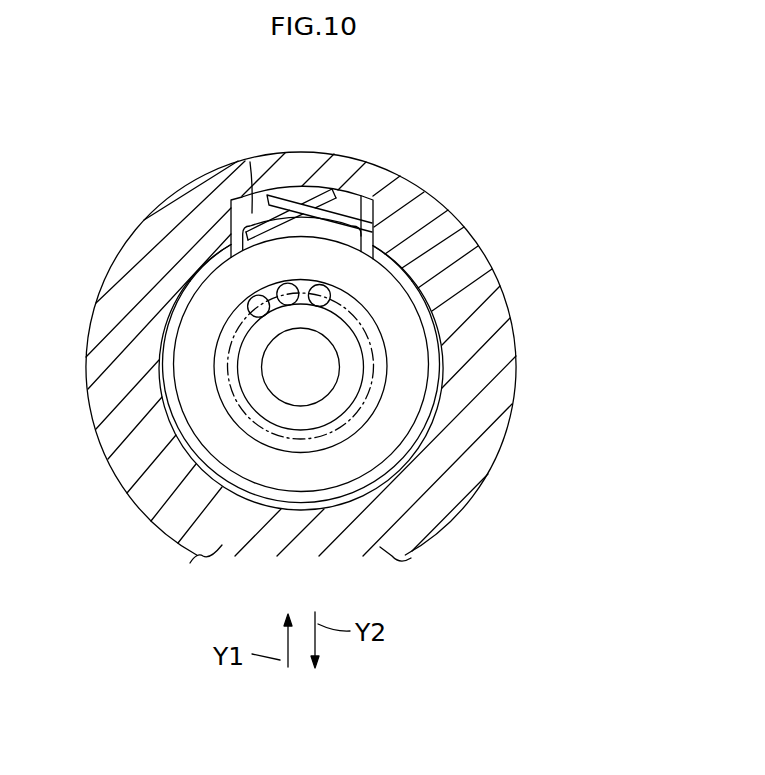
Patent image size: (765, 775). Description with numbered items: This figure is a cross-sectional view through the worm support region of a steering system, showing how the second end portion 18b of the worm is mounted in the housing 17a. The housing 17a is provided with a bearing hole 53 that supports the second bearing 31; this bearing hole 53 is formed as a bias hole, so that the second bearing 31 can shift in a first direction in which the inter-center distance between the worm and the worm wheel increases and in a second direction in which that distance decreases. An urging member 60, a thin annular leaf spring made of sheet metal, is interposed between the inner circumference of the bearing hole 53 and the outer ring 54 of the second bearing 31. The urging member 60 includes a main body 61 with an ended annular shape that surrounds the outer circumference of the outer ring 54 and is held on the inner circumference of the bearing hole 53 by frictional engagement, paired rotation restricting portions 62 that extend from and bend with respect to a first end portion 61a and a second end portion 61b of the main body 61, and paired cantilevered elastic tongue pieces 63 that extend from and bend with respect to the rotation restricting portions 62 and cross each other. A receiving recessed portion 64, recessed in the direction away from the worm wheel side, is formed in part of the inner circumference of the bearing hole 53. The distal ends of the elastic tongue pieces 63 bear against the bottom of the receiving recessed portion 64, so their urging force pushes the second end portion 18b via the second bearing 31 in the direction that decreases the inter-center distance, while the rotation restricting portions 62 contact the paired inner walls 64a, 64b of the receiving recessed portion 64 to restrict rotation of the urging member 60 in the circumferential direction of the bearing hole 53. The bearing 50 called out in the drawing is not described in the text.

The housing 17a is at (505, 399).
The second end portion of the worm 18b is at (172, 497).
The second bearing 31 is at (434, 305).
The bearing 50 is at (343, 394).
The bearing hole 53 is at (253, 614).
The outer ring 54 is at (363, 456).
The urging member 60 is at (413, 461).
The main body 61 is at (300, 380).
The first end portion 61a is at (373, 242).
The second end portion 61b is at (232, 266).
The rotation restricting portions 62 is at (233, 234).
The elastic tongue pieces 63 is at (277, 192).
The receiving recessed portion 64 is at (299, 181).
The inner wall 64a is at (355, 205).
The inner wall 64b is at (240, 205).